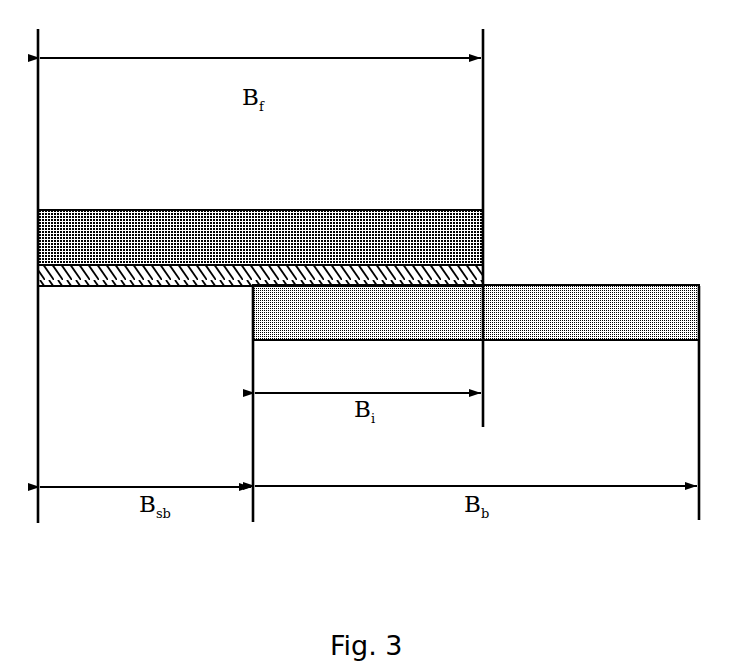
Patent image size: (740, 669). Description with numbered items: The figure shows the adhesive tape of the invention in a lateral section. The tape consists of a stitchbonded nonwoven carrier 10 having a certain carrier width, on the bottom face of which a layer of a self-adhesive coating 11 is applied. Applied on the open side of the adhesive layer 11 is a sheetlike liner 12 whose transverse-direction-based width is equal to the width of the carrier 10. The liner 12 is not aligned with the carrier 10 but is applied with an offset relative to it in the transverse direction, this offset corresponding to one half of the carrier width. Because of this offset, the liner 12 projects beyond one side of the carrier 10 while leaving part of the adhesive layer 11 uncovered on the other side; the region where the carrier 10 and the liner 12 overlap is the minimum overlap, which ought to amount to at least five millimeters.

The stitchbonded nonwoven carrier 10 is at (192, 220).
The self-adhesive coating 11 is at (195, 272).
The sheetlike liner 12 is at (508, 318).